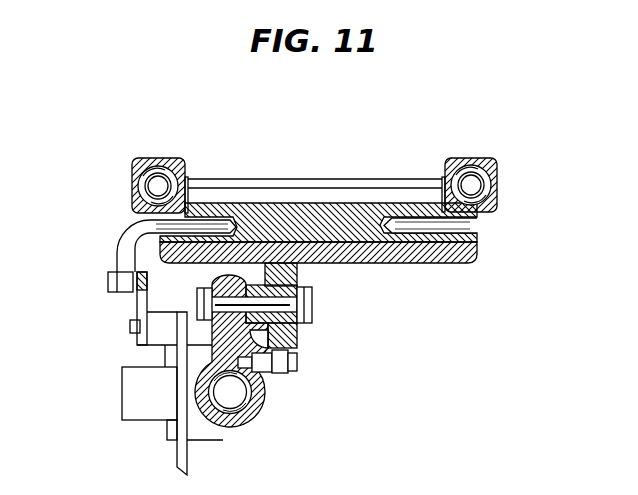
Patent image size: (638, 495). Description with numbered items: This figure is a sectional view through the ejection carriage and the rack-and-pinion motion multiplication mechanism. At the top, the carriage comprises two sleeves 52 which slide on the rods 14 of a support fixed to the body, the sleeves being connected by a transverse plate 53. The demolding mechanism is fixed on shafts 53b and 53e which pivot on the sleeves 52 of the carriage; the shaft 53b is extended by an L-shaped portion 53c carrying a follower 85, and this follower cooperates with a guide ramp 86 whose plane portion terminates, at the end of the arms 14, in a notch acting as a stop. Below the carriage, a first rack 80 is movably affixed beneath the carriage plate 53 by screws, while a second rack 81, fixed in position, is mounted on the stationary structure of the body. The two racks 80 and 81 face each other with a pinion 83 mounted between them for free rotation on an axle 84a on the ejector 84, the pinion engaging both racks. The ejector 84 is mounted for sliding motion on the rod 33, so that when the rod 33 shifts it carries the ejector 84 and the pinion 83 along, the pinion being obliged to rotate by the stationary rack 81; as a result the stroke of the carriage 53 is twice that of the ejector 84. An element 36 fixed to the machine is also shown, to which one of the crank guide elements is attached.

The rods 14 is at (168, 159).
The sleeves 52 is at (140, 163).
The transverse plate 53 is at (420, 249).
The shaft 53b is at (124, 241).
The L-shaped portion 53c is at (110, 269).
The shaft 53e is at (430, 238).
The follower 85 is at (140, 301).
The guide ramp 86 is at (137, 299).
The element fixed to the machine 36 is at (178, 461).
The first rack 80 is at (297, 269).
The ejector 84 is at (262, 413).
The axle 84a is at (313, 304).
The pinion 83 is at (297, 336).
The second rack 81 is at (300, 349).
The rod 33 is at (237, 428).